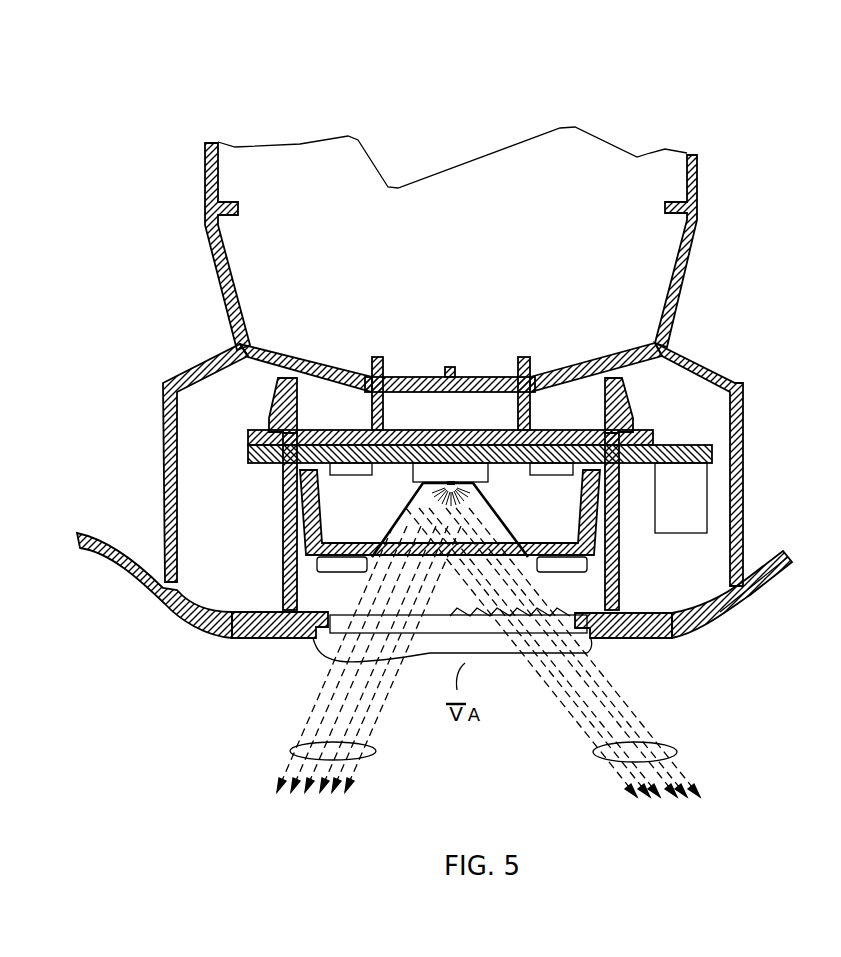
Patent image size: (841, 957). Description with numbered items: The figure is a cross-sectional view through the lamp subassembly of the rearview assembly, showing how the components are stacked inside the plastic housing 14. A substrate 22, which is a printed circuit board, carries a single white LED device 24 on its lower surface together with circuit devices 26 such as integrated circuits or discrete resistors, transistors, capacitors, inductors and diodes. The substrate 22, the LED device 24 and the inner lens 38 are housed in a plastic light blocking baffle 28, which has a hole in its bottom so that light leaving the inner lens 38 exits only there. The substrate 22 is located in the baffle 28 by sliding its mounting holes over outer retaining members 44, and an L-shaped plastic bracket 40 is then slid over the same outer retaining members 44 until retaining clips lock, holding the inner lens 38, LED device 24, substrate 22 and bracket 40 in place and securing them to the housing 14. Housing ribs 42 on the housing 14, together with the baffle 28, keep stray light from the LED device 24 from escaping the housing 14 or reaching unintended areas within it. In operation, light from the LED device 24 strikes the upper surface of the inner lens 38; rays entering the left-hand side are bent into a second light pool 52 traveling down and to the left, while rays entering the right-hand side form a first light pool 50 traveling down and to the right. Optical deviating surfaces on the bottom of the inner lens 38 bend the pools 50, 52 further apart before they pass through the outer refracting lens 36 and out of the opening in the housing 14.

The housing 14 is at (767, 553).
The substrate 22 is at (440, 429).
The single white LED device 24 is at (485, 468).
The circuit devices 26 is at (367, 476).
The light blocking baffle 28 is at (283, 530).
The refracting lens 36 is at (321, 640).
The inner lens 38 is at (452, 540).
The bracket 40 is at (553, 429).
The housing ribs 42 is at (163, 422).
The outer retaining members 44 is at (279, 385).
The first light pool 50 is at (677, 752).
The second light pool 52 is at (291, 752).